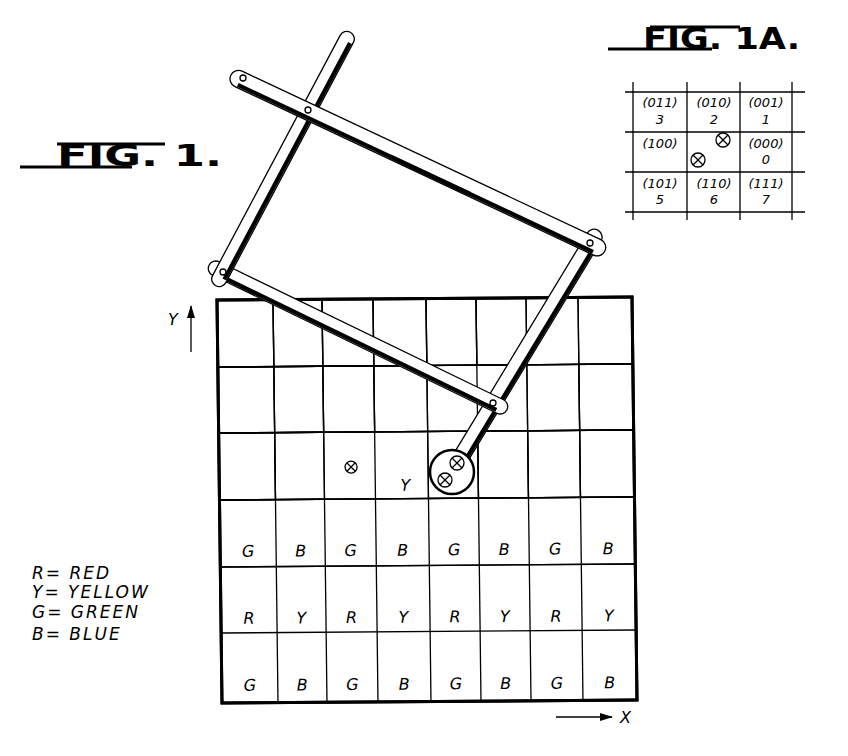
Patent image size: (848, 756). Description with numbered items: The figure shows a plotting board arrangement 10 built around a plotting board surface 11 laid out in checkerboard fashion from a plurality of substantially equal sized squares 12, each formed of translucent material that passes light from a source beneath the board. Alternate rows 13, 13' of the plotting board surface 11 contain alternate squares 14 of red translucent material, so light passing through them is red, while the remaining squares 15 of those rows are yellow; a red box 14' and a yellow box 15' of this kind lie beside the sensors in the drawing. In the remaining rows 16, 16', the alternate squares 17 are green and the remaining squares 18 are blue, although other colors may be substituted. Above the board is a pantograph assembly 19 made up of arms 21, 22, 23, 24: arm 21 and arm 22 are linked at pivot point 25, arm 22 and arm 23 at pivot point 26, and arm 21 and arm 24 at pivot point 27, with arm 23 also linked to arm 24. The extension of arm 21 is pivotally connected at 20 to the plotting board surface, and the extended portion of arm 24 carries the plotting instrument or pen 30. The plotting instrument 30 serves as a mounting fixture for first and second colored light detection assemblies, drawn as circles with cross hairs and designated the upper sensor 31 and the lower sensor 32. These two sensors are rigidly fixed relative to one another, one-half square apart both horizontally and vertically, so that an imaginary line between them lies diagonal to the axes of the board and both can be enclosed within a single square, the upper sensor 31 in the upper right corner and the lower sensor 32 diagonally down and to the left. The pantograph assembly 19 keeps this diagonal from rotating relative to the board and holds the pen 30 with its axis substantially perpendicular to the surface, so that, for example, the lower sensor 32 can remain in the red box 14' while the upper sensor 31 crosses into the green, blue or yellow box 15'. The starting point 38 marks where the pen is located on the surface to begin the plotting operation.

In FIG. 1, the plotting board arrangement 10 is at (138, 516).
In FIG. 1, the plotting board surface 11 is at (191, 440).
In FIG. 1, the squares 12 is at (221, 540).
In FIG. 1, the alternate rows 13 is at (454, 332).
In FIG. 1, the alternate row 13' is at (457, 465).
In FIG. 1, the red squares 14 is at (347, 332).
In FIG. 1, the red box 14' is at (400, 465).
In FIG. 1, the yellow squares 15 is at (453, 332).
In FIG. 1, the yellow box 15' is at (455, 465).
In FIG. 1, the remaining rows 16 is at (455, 532).
In FIG. 1, the remaining row 16' is at (457, 398).
In FIG. 1, the green squares 17 is at (399, 398).
In FIG. 1, the blue squares 18 is at (454, 398).
In FIG. 1, the pantograph assembly 19 is at (400, 137).
In FIG. 1, the pivotal connection 20 is at (245, 75).
In FIG. 1, the arm 21 is at (429, 179).
In FIG. 1, the arm 22 is at (262, 216).
In FIG. 1, the arm 23 is at (272, 288).
In FIG. 1, the arm 24 is at (577, 281).
In FIG. 1, the pivot point 25 is at (314, 110).
In FIG. 1, the pivot point 26 is at (216, 274).
In FIG. 1, the pivot point 27 is at (598, 244).
In FIG. 1, the plotting instrument 30 is at (475, 469).
In FIG. 1, the upper sensor 31 is at (450, 462).
In FIG. 1A, the upper sensor 31 is at (729, 146).
In FIG. 1, the lower sensor 32 is at (437, 478).
In FIG. 1A, the lower sensor 32 is at (702, 154).
In FIG. 1, the starting point 38 is at (348, 471).